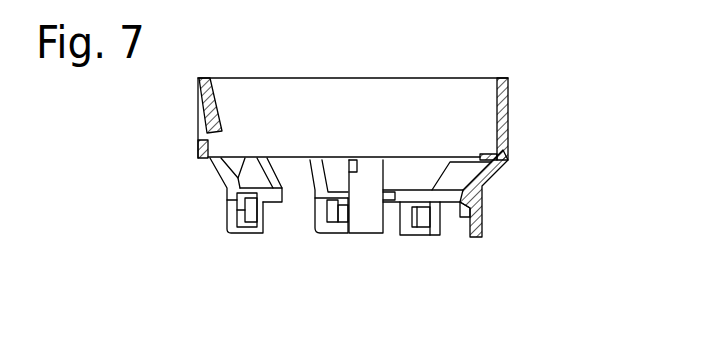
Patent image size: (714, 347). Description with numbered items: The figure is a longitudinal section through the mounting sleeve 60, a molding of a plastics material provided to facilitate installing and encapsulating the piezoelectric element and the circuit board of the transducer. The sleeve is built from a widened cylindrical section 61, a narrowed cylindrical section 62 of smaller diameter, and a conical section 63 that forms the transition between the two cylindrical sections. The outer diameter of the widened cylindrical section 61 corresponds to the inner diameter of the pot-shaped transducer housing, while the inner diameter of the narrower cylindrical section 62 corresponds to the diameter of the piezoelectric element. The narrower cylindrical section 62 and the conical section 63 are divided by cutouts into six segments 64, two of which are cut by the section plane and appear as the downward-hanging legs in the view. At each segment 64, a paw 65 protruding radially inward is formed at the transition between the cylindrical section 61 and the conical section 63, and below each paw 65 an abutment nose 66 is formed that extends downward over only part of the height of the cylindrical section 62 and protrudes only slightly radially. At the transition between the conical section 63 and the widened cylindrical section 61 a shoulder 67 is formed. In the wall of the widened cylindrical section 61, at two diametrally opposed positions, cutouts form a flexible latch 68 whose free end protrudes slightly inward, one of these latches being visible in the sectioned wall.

The mounting sleeve 60 is at (541, 131).
The widened cylindrical section 61 is at (509, 88).
The narrowed cylindrical section 62 is at (482, 212).
The conical section 63 is at (490, 184).
The segment 64 is at (251, 234).
The paw 65 is at (275, 193).
The abutment nose 66 is at (237, 210).
The shoulder 67 is at (490, 154).
The flexible latch 68 is at (216, 113).